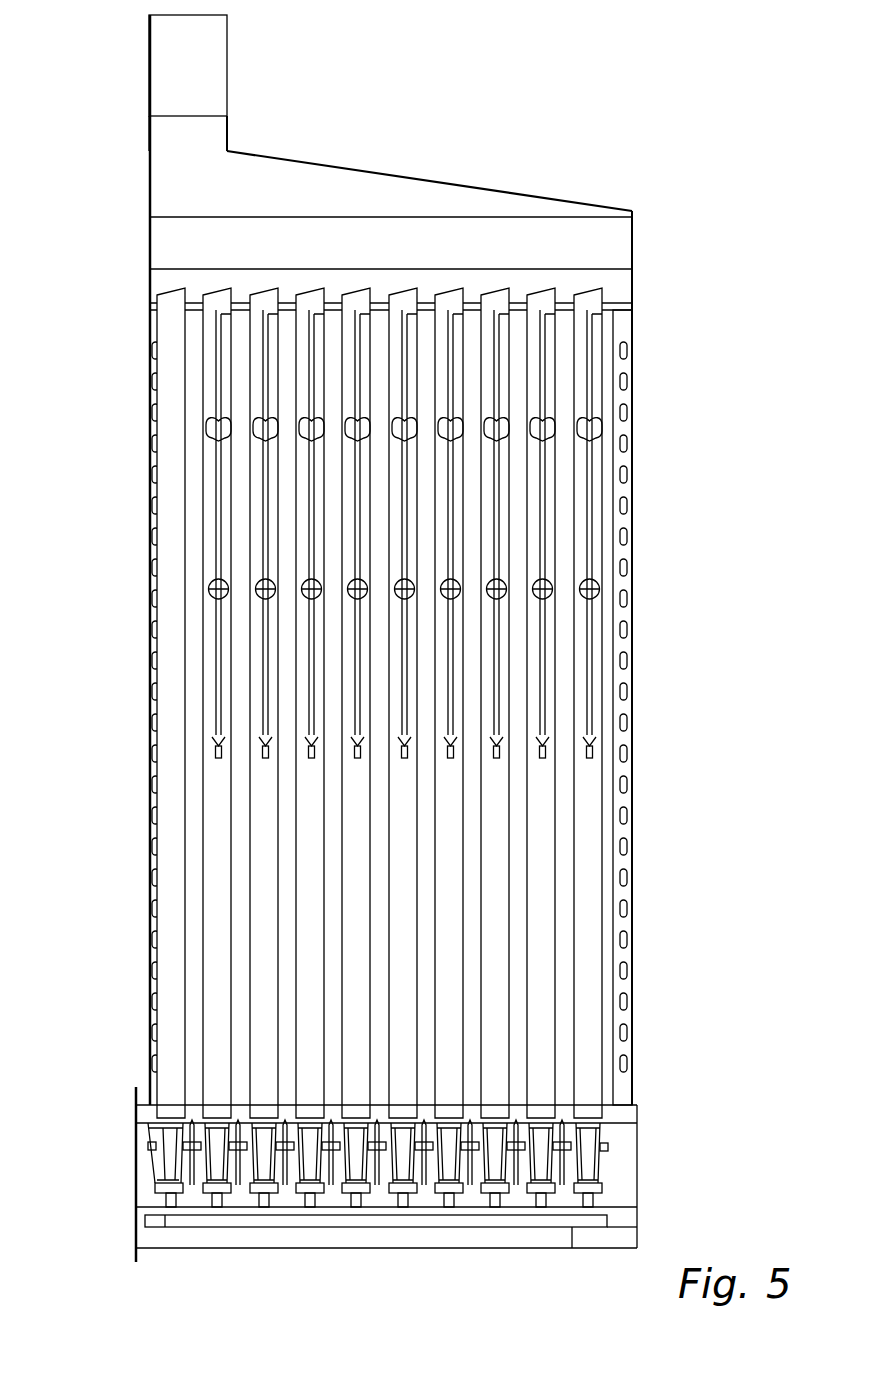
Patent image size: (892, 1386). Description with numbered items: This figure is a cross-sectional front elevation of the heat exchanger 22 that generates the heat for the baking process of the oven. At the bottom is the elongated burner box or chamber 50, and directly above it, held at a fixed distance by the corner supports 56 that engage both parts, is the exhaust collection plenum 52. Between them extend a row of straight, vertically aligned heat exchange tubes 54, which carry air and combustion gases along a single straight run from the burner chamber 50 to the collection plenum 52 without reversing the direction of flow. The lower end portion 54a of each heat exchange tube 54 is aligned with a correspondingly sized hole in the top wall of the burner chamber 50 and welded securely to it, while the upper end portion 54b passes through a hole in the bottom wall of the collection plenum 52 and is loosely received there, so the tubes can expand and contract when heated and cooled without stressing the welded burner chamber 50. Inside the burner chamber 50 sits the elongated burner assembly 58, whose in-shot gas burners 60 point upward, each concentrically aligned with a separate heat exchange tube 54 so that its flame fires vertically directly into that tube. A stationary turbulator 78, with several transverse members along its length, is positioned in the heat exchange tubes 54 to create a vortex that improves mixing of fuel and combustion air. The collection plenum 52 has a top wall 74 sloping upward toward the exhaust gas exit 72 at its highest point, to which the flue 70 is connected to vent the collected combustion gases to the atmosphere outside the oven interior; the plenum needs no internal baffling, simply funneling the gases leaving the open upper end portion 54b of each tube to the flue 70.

The heat exchanger 22 is at (738, 459).
The burner box or chamber 50 is at (640, 1165).
The exhaust collection plenum 52 is at (148, 193).
The heat exchange tubes 54 is at (210, 888).
The lower end portion of heat exchange tube 54a is at (170, 1105).
The upper end portion of heat exchange tube 54b is at (172, 302).
The corner supports 56 is at (155, 800).
The burner assembly 58 is at (185, 1215).
The in-shot gas burners 60 is at (160, 1160).
The flue 70 is at (162, 59).
The exhaust gas exit 72 is at (162, 160).
The top wall of collection plenum 74 is at (330, 163).
The stationary turbulator 78 is at (215, 390).